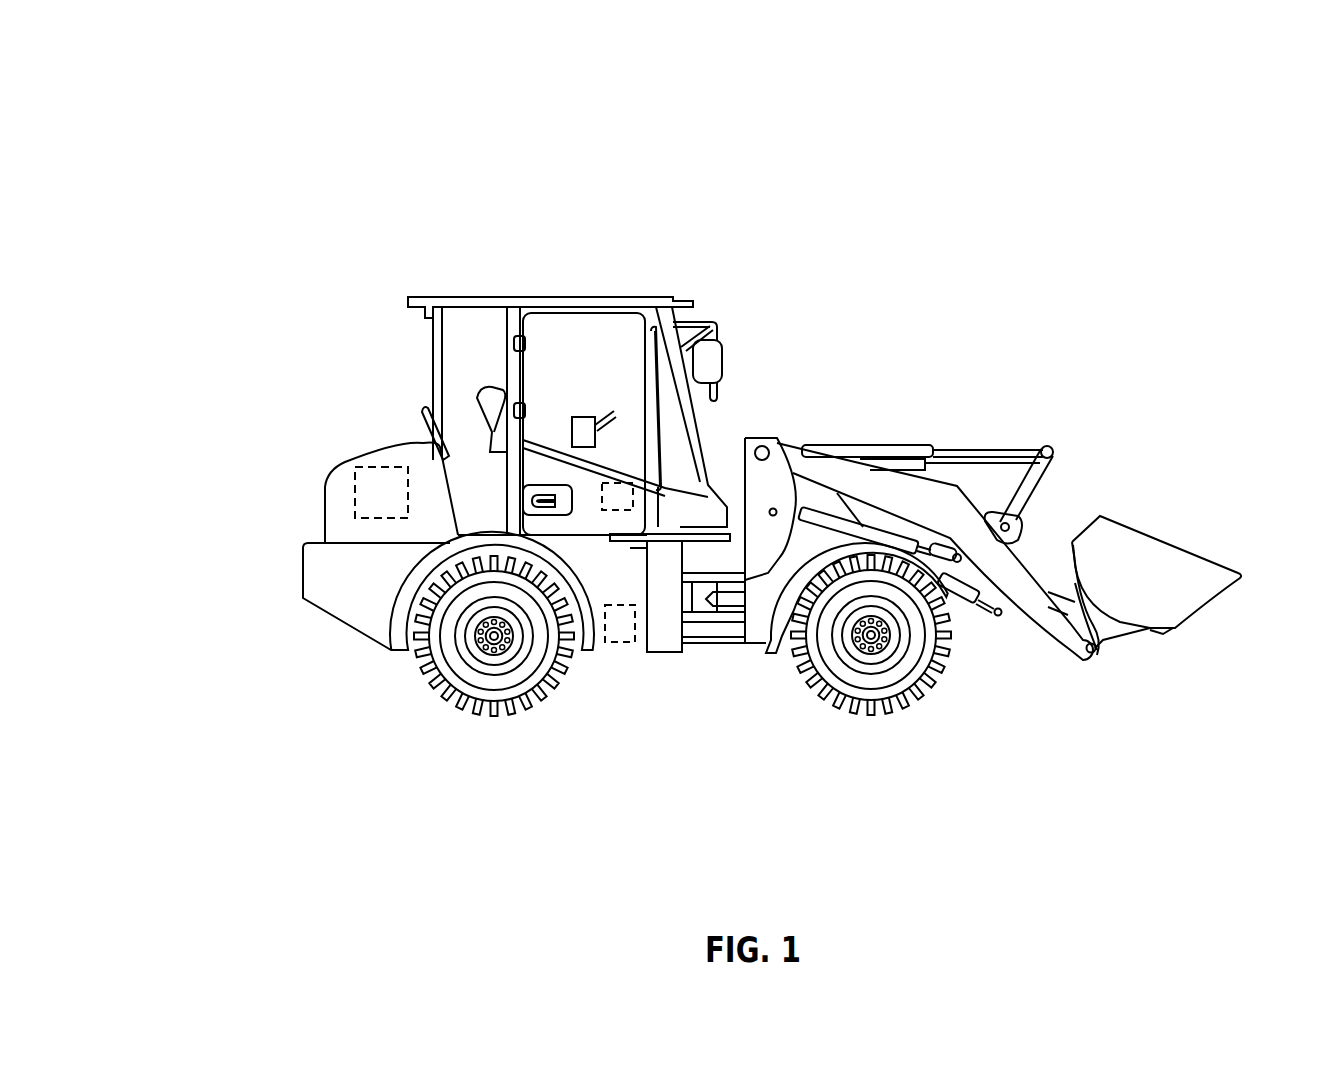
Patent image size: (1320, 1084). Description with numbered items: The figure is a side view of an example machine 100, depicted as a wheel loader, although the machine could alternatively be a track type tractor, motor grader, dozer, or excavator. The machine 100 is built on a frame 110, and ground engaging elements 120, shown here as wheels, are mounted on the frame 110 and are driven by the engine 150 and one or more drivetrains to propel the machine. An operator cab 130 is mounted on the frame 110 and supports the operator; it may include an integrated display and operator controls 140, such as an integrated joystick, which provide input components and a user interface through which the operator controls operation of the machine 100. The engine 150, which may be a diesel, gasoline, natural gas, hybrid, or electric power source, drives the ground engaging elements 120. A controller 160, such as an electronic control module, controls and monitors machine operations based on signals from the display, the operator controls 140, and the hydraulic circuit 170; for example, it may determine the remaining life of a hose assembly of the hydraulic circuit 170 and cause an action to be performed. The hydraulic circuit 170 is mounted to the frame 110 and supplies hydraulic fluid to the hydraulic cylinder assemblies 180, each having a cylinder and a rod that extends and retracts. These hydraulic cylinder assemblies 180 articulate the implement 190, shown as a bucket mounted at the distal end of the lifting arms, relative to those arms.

The machine 100 is at (262, 64).
The frame 110 is at (657, 653).
The ground engaging elements 120 is at (418, 666).
The operator cab 130 is at (437, 371).
The operator controls 140 is at (572, 413).
The engine 150 is at (355, 483).
The controller 160 is at (607, 512).
The hydraulic circuit 170 is at (615, 643).
The hydraulic cylinder assemblies 180 is at (822, 443).
The implement 190 is at (1158, 551).